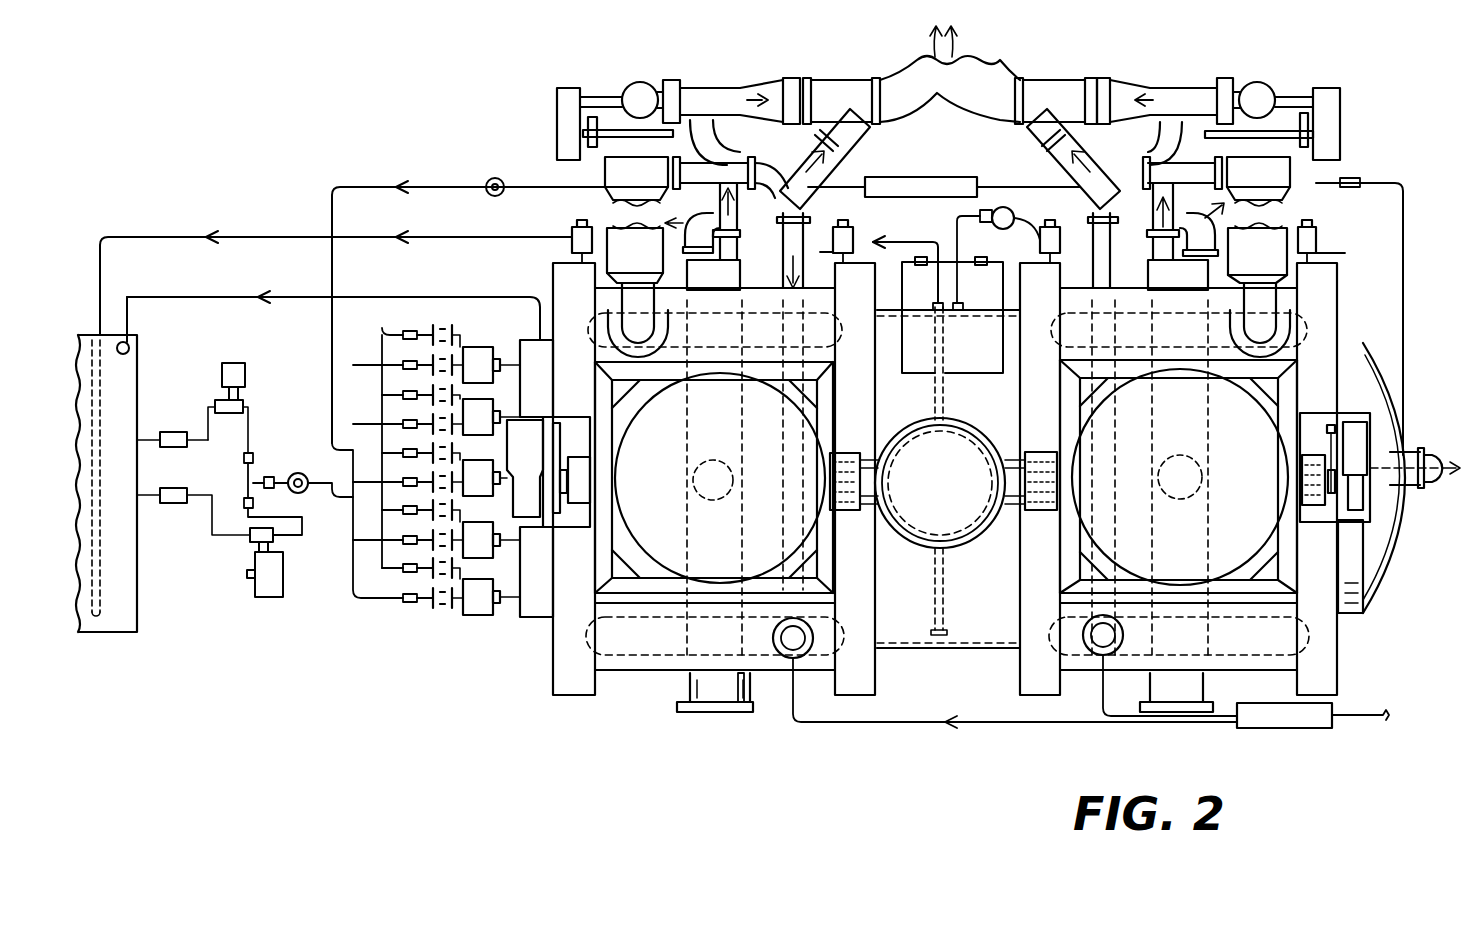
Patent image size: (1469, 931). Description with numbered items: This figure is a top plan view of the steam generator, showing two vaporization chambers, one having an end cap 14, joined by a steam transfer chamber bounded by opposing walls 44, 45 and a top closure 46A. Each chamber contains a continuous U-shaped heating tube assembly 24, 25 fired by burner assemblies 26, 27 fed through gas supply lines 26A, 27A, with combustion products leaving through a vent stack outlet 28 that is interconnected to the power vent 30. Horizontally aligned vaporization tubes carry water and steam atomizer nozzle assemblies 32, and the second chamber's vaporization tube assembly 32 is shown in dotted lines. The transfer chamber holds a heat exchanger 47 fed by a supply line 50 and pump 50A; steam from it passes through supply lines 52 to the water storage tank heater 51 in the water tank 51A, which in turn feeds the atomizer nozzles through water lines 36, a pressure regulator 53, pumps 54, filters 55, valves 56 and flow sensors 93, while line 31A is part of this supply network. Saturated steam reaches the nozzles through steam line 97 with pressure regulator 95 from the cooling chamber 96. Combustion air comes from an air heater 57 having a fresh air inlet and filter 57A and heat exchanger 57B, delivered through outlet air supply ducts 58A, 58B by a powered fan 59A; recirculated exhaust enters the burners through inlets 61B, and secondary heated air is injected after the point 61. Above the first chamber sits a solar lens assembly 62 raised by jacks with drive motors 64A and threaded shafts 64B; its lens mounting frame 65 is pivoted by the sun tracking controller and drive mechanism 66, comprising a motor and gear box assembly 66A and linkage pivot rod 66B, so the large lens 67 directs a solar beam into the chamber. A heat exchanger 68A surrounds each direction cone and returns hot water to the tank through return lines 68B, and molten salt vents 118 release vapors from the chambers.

The end cap 14 is at (527, 356).
The heating tube assembly 24 is at (645, 645).
The heating tube assembly 25 is at (1275, 640).
The burner assembly 26 is at (800, 658).
The gas supply line 26A is at (965, 722).
The burner assembly 27 is at (1097, 656).
The gas supply line 27A is at (1098, 718).
The vent stack outlet 28 is at (640, 333).
The power vent 30 is at (621, 82).
The water supply line 31A is at (415, 298).
The water and steam atomizer nozzle assembly 32 is at (490, 345).
The water lines 36 is at (352, 572).
The wall 44 is at (992, 293).
The wall 45 is at (946, 650).
The top closure 46A is at (918, 627).
The heat exchanger 47 is at (930, 420).
The supply line 50 is at (975, 232).
The pump 50A is at (1010, 203).
The water storage tank heater 51 is at (110, 602).
The water tank 51A is at (125, 395).
The supply lines 52 is at (262, 237).
The pressure regulator 53 is at (315, 457).
The pump 54 is at (245, 378).
The filter 55 is at (190, 410).
The valve 56 is at (253, 458).
The air heater 57 is at (683, 537).
The fresh air inlet and filter 57A is at (708, 715).
The heat exchanger 57B is at (750, 690).
The outlet air supply duct 58A is at (722, 228).
The outlet air supply duct 58B is at (737, 215).
The powered fan 59A is at (553, 132).
The point of burner re-circulation air 61 is at (628, 604).
The inlet 61B is at (735, 152).
The solar lens assembly 62 is at (1240, 375).
The drive motor 64A is at (575, 238).
The threaded shaft 64B is at (570, 255).
The lens mounting frame 65 is at (1285, 392).
The sun tracking controller and drive mechanism 66 is at (1355, 440).
The motor and gear box assembly 66A is at (527, 418).
The linkage pivot rod 66B is at (1282, 430).
The lens 67 is at (1373, 595).
The heat exchanger 68A is at (803, 403).
The return line 68B is at (920, 337).
The flow sensor 93 is at (442, 608).
The pressure regulator 95 is at (494, 178).
The cooling chamber 96 is at (947, 180).
The steam line 97 is at (388, 160).
The molten salt vent 118 is at (835, 157).